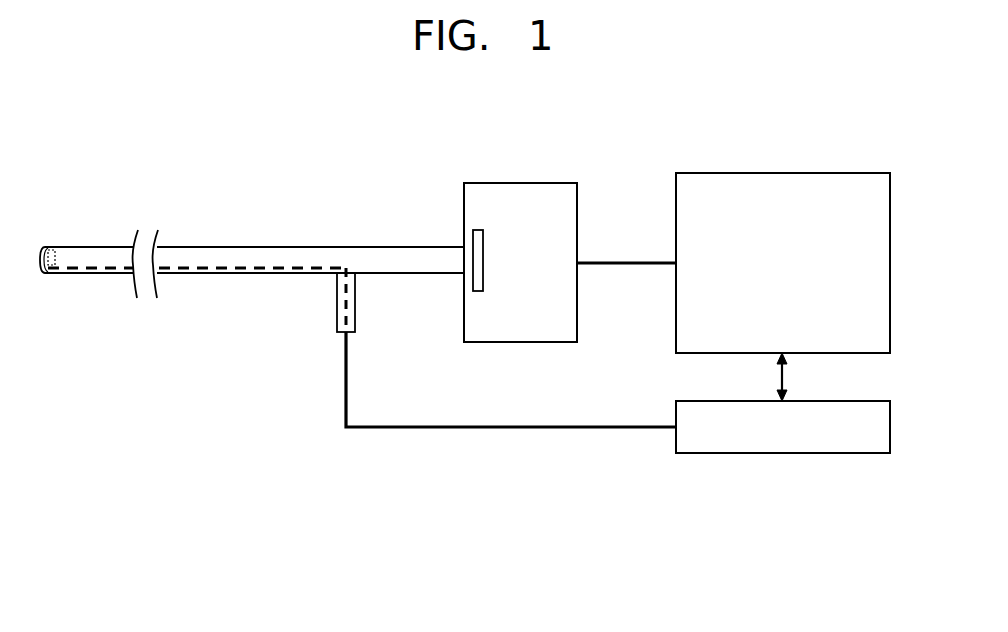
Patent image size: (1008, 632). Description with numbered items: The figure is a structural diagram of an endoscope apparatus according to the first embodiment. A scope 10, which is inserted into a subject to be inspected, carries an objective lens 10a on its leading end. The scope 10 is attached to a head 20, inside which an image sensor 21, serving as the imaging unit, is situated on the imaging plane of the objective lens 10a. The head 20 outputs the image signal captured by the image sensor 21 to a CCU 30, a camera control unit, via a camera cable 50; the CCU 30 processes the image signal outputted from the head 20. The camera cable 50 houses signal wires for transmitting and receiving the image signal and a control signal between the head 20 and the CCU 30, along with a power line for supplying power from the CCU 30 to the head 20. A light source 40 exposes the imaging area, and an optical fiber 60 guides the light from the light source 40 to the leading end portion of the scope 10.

The scope 10 is at (364, 246).
The objective lens 10a is at (55, 250).
The head 20 is at (548, 183).
The image sensor 21 is at (475, 230).
The CCU (camera control unit) 30 is at (830, 173).
The light source 40 is at (856, 401).
The camera cable 50 is at (628, 262).
The optical fiber 60 is at (600, 426).